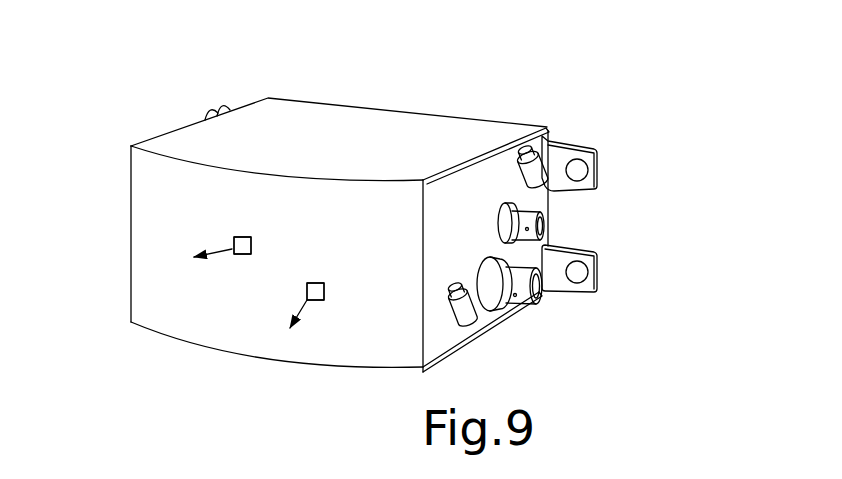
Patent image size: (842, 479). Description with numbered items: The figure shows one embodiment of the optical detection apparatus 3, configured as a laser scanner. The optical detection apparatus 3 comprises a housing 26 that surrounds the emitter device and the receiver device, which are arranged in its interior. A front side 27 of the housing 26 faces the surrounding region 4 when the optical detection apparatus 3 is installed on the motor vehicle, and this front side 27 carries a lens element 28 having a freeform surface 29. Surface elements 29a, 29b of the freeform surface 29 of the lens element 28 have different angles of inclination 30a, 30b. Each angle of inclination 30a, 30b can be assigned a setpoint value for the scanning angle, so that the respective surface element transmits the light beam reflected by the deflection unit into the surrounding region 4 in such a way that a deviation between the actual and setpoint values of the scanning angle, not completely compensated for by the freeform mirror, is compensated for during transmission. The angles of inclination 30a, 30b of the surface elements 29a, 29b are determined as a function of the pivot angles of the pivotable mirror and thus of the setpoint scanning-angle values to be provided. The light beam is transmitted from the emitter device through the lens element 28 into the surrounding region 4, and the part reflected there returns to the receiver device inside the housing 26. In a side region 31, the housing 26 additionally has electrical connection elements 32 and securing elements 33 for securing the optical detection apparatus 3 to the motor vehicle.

The optical detection apparatus 3 is at (331, 198).
The surrounding region 4 is at (85, 281).
The housing 26 is at (353, 120).
The front side 27 is at (156, 181).
The lens element 28 is at (147, 222).
The freeform surface 29 is at (219, 274).
The surface element 29a is at (242, 255).
The surface element 29b is at (316, 301).
The angle of inclination 30a is at (233, 238).
The angle of inclination 30b is at (308, 285).
The side region 31 is at (530, 203).
The electrical connection elements 32 is at (541, 230).
The securing elements 33 is at (578, 168).